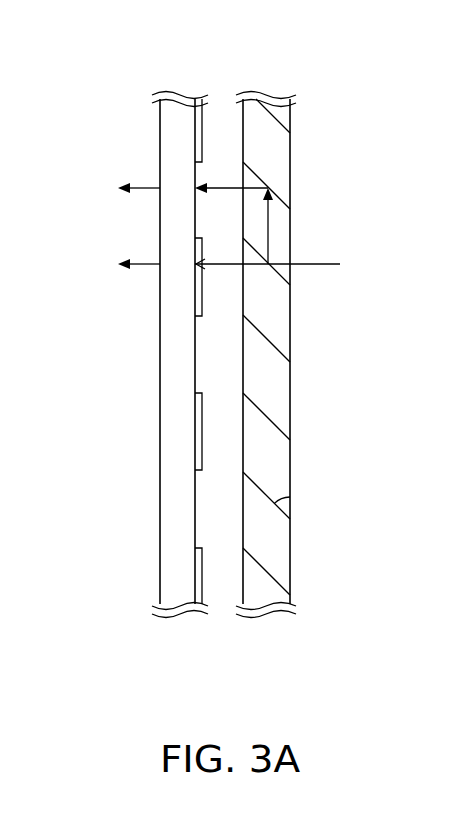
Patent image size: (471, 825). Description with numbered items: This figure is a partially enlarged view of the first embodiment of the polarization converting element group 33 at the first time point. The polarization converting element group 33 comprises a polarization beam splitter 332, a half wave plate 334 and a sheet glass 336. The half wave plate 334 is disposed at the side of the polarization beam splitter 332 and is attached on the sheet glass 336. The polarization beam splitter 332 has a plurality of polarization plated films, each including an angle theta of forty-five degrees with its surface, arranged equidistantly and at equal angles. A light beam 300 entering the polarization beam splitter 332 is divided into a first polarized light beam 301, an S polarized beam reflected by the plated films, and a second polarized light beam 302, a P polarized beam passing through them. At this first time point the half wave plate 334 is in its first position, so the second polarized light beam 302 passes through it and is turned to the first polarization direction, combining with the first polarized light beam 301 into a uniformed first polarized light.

The polarization converting element group 33 is at (70, 97).
The polarization beam splitter 332 is at (291, 129).
The half wave plate 334 is at (200, 122).
The sheet glass 336 is at (168, 136).
The light beam 300 is at (249, 263).
The first polarized light beam 301 is at (268, 228).
The second polarized light beam 302 is at (220, 266).